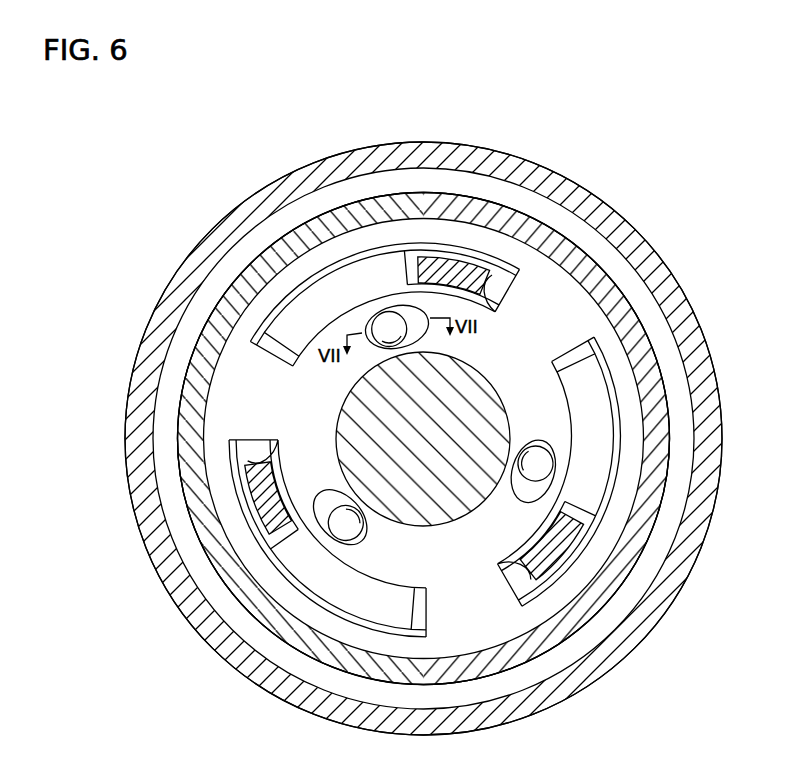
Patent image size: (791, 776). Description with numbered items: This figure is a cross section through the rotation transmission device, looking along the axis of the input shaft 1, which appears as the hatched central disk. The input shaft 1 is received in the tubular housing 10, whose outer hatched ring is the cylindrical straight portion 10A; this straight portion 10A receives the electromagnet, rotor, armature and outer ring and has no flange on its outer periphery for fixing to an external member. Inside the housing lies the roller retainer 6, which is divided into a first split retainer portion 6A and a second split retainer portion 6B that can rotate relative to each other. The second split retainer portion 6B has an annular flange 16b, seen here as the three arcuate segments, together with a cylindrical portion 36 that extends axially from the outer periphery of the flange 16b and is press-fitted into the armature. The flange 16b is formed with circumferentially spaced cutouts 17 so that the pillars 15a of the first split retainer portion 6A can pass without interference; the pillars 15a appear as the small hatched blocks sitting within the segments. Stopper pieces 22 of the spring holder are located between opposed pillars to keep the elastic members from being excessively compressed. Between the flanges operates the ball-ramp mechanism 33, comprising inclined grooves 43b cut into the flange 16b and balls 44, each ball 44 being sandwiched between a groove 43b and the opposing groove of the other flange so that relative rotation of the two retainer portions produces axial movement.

The input shaft 1 is at (455, 512).
The roller retainer 6 is at (177, 417).
The first split retainer portion 6A is at (463, 245).
The second split retainer portion 6B is at (183, 365).
The housing 10 is at (643, 643).
The cylindrical straight portion 10A is at (312, 707).
The pillars 15a is at (442, 252).
The annular flange 16b is at (555, 293).
The cutouts 17 is at (500, 273).
The stopper pieces 22 is at (308, 318).
The ball-ramp mechanism 33 is at (377, 305).
The cylindrical portion 36 is at (190, 520).
The inclined grooves 43b is at (306, 316).
The balls 44 is at (392, 317).